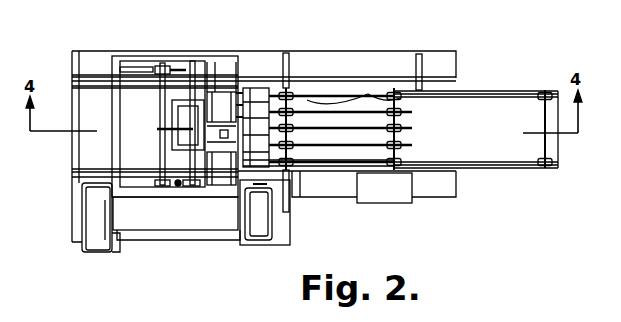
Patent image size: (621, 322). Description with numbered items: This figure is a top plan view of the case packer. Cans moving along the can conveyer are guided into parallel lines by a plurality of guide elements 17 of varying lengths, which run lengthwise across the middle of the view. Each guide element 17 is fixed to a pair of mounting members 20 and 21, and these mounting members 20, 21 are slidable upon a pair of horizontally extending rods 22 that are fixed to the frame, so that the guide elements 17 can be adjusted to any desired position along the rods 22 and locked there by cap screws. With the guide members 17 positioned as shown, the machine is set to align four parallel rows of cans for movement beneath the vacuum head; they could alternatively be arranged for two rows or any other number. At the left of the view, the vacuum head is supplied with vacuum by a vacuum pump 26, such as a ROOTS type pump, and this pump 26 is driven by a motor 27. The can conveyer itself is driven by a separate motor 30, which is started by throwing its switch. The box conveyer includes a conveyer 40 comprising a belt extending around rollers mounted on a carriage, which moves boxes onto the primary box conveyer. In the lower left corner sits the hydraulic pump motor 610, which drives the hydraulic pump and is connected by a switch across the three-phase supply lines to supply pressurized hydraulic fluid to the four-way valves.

The guide elements 17 is at (412, 151).
The mounting member 20 is at (292, 92).
The mounting member 21 is at (398, 88).
The horizontally extending rods 22 is at (368, 94).
The vacuum pump 26 is at (220, 97).
The motor 27 is at (213, 173).
The motor 30 is at (273, 220).
The conveyer 40 is at (387, 194).
The hydraulic pump motor 610 is at (88, 212).